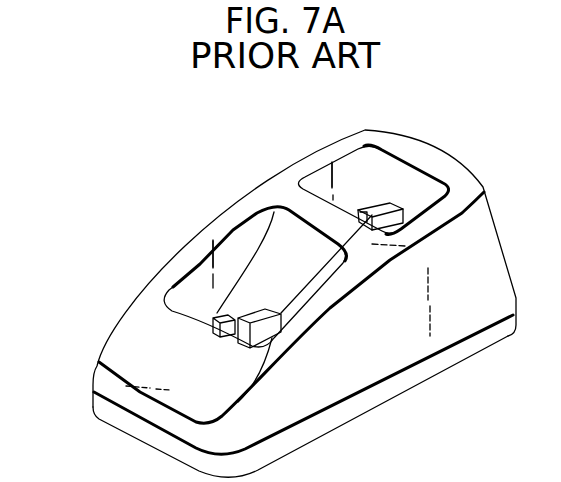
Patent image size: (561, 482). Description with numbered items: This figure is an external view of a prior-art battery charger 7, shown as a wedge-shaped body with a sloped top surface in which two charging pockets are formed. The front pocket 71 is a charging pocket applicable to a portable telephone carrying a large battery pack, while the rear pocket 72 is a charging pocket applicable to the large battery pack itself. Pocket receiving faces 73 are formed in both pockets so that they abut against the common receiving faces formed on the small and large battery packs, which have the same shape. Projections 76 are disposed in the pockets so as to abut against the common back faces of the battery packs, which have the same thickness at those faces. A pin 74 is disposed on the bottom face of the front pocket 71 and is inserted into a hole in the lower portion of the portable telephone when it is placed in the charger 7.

The battery charger 7 is at (440, 162).
The front pocket 71 is at (172, 312).
The rear pocket 72 is at (428, 205).
The pocket receiving faces 73 is at (365, 305).
The pin 74 is at (215, 343).
The projections 76 is at (378, 225).